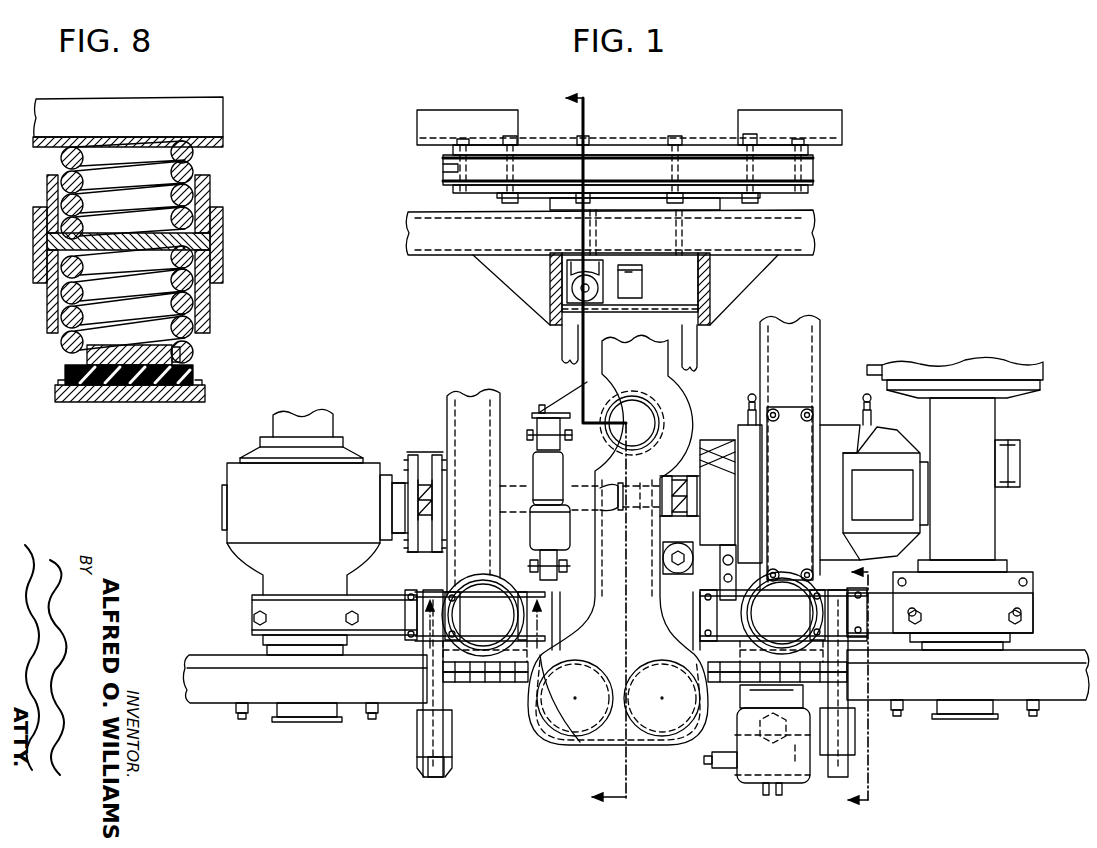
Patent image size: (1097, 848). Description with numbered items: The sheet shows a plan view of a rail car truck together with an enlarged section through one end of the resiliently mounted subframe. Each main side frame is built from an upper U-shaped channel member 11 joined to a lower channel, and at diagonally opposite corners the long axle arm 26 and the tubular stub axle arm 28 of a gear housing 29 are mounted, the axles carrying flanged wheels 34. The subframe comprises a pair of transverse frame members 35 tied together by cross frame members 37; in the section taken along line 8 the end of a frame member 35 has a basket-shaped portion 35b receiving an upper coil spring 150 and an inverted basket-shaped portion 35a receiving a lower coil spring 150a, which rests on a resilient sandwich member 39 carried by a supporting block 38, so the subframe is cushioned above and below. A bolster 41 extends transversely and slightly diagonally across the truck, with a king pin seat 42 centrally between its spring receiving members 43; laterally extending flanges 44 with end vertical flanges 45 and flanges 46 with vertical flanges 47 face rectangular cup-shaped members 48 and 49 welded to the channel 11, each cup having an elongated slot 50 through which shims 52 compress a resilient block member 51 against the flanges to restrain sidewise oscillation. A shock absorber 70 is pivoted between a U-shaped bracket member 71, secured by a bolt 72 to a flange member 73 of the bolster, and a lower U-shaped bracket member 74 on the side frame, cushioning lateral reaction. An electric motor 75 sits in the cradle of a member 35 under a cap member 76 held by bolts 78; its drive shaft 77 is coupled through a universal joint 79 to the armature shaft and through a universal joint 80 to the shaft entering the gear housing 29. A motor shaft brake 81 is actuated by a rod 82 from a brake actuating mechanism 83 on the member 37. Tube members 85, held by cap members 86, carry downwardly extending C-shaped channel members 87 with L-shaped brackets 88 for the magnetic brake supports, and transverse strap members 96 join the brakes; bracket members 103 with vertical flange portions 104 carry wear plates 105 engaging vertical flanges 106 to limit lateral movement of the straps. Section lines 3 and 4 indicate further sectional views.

In FIG. 8, the upper U-shaped channel member 11 is at (223, 120).
In FIG. 8, the coil spring 150 is at (193, 157).
In FIG. 8, the basket-shaped portion 35b is at (210, 190).
In FIG. 8, the transverse frame member 35 is at (223, 236).
In FIG. 1, the transverse frame member 35 is at (447, 398).
In FIG. 8, the inverted basket-shaped portion 35a is at (210, 303).
In FIG. 8, the coil spring 150a is at (182, 350).
In FIG. 8, the resilient sandwich member 39 is at (193, 375).
In FIG. 8, the supporting block 38 is at (205, 398).
In FIG. 1, the section line 3- 3 is at (607, 449).
In FIG. 1, the section line 4- 4 is at (872, 687).
In FIG. 1, the section line 8- 8 is at (485, 634).
In FIG. 1, the bracket member 103 is at (500, 286).
In FIG. 1, the vertical flange portion 104 is at (552, 270).
In FIG. 1, the wear plate 105 is at (550, 308).
In FIG. 1, the vertical flange 106 is at (630, 292).
In FIG. 1, the strap member 96 is at (560, 340).
In FIG. 1, the bolster 41 is at (697, 388).
In FIG. 1, the king pin seat 42 is at (625, 398).
In FIG. 1, the bolt 72 is at (541, 405).
In FIG. 1, the flange member 73 is at (563, 392).
In FIG. 1, the U-shaped bracket member 71 is at (532, 414).
In FIG. 1, the shock absorber 70 is at (537, 450).
In FIG. 1, the drive shaft 77 is at (506, 512).
In FIG. 1, the rectangular cup-shaped member 48 is at (532, 595).
In FIG. 1, the U-shaped bracket member 74 is at (598, 535).
In FIG. 1, the universal joint 79 is at (668, 478).
In FIG. 1, the laterally extending flange 46 is at (663, 585).
In FIG. 1, the rectangular cup-shaped member 49 is at (712, 596).
In FIG. 1, the motor shaft brake 81 is at (722, 420).
In FIG. 1, the universal joint 80 is at (440, 500).
In FIG. 1, the long axle arm 26 is at (288, 425).
In FIG. 1, the gear housing 29 is at (1000, 358).
In FIG. 1, the tubular stub axle arm 28 is at (275, 572).
In FIG. 1, the electric motor 75 is at (830, 432).
In FIG. 1, the cap member 76 is at (780, 476).
In FIG. 1, the bolt 78 is at (806, 409).
In FIG. 1, the elongated slot 50 is at (478, 580).
In FIG. 1, the shim 52 is at (478, 620).
In FIG. 1, the actuating rod 82 is at (728, 652).
In FIG. 1, the cap member 86 is at (428, 600).
In FIG. 1, the flanged wheel 34 is at (210, 695).
In FIG. 1, the tube member 85 is at (443, 700).
In FIG. 1, the L-shaped bracket 88 is at (417, 745).
In FIG. 1, the C-shaped channel member 87 is at (452, 762).
In FIG. 1, the cross frame member 37 is at (500, 684).
In FIG. 1, the vertical flange 45 is at (560, 600).
In FIG. 1, the laterally extending flange 44 is at (612, 595).
In FIG. 1, the vertical flange 47 is at (693, 618).
In FIG. 1, the resilient block member 51 is at (548, 665).
In FIG. 1, the spring receiving member 43 is at (578, 745).
In FIG. 1, the brake actuating mechanism 83 is at (752, 765).